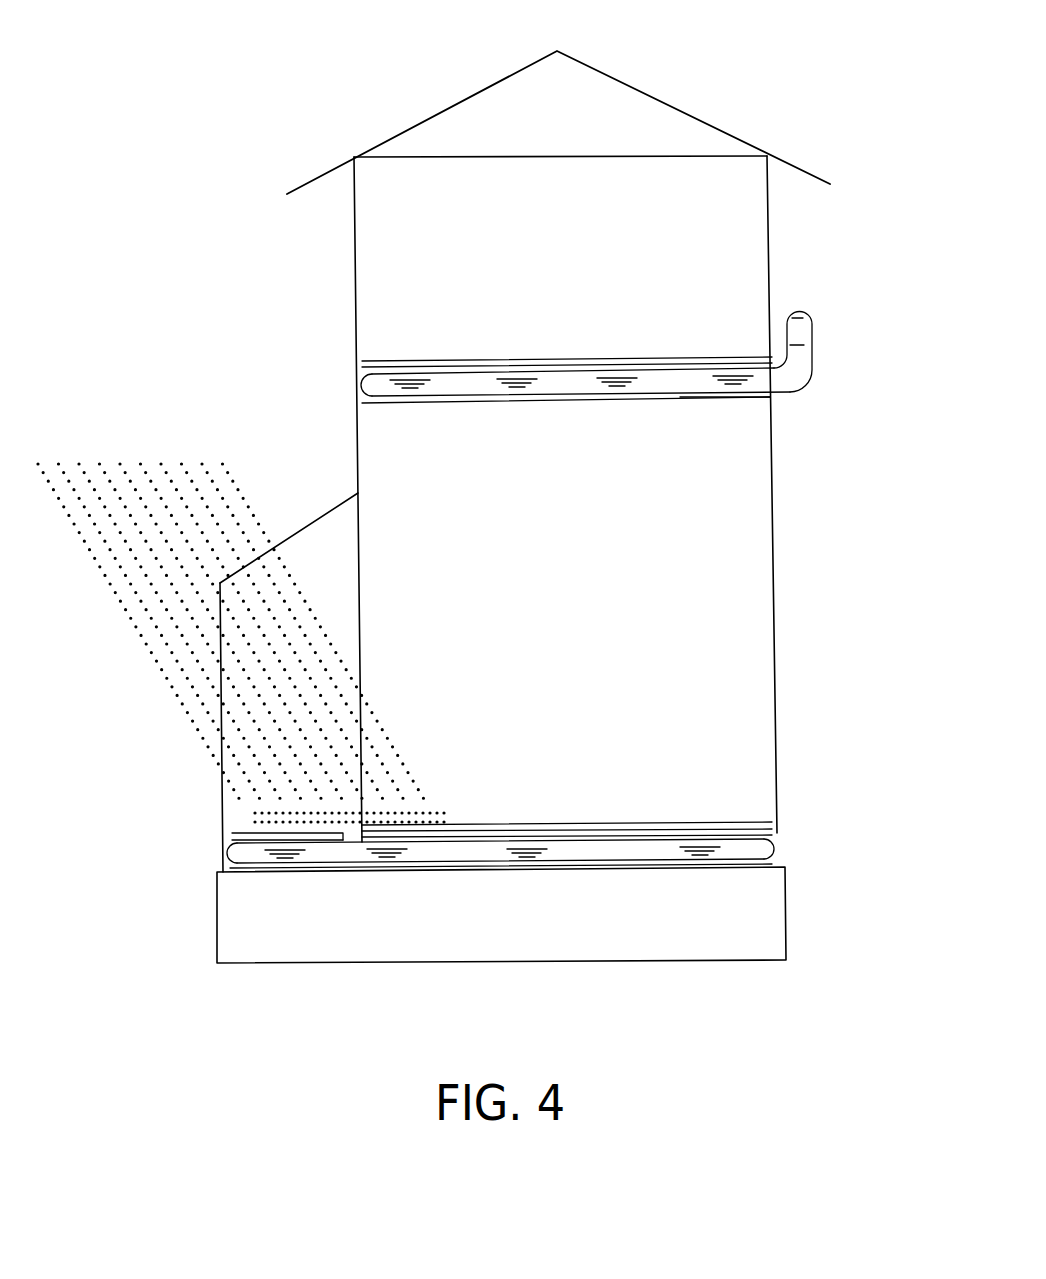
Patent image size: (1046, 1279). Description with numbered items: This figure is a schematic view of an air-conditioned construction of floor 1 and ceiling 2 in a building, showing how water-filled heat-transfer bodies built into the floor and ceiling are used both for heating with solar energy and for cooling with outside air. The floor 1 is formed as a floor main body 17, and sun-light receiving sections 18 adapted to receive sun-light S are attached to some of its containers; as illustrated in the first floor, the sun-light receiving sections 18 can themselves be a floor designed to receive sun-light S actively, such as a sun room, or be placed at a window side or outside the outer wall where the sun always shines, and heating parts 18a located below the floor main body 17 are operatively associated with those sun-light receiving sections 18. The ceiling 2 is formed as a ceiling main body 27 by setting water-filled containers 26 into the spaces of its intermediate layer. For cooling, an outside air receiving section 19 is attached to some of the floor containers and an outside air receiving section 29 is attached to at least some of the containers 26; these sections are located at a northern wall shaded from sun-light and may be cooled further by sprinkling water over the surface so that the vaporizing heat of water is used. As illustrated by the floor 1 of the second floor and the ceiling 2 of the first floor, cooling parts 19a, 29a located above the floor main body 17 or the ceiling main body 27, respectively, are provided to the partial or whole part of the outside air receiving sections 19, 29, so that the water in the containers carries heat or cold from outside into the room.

The floor 1 is at (523, 507).
The ceiling 2 is at (723, 353).
The containers 26 is at (575, 344).
The floor main body 17 is at (480, 361).
The sun-light receiving sections 18 is at (342, 857).
The heating parts 18a is at (282, 857).
The outside air receiving section 19 is at (836, 350).
The outside air receiving section 29 is at (836, 350).
The cooling parts 19a is at (844, 315).
The cooling parts 29a is at (797, 330).
The ceiling main body 27 is at (693, 401).
The sun-light S is at (241, 621).